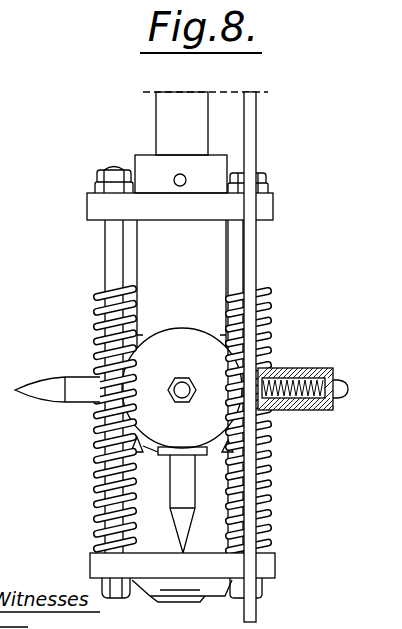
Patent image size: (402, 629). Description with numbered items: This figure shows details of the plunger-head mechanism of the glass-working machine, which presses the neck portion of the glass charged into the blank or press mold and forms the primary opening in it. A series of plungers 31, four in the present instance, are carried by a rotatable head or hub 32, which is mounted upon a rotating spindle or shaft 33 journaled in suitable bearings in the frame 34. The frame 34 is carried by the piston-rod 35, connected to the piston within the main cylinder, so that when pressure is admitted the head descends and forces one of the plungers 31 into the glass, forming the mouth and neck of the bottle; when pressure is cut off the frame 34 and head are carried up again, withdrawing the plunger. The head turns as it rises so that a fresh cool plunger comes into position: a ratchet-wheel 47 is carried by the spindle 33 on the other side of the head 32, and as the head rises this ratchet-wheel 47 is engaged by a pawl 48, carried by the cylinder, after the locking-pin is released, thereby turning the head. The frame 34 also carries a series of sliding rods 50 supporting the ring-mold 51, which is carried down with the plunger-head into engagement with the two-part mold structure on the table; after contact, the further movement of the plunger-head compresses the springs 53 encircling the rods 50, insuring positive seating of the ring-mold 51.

The plunger 31 is at (356, 390).
The rotatable head or hub 32 is at (139, 446).
The spindle or shaft 33 is at (192, 391).
The frame 34 is at (181, 251).
The piston-rod 35 is at (182, 123).
The ratchet-wheel 47 is at (182, 391).
The pawl 48 is at (257, 465).
The sliding rod 50 is at (106, 249).
The ring-mold 51 is at (200, 597).
The spring 53 is at (98, 483).